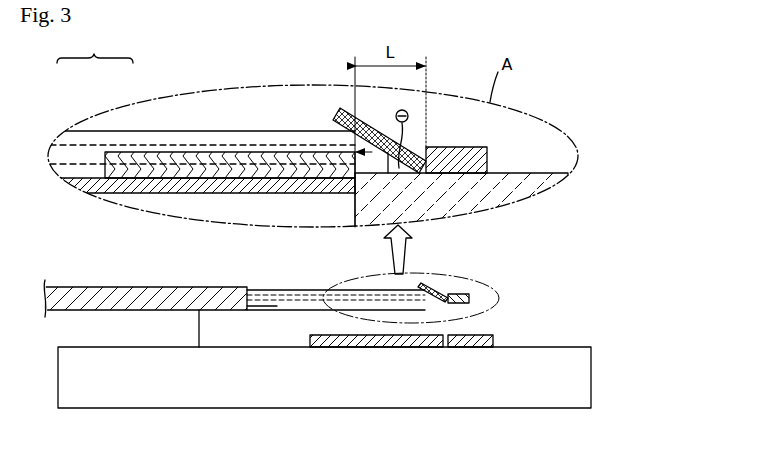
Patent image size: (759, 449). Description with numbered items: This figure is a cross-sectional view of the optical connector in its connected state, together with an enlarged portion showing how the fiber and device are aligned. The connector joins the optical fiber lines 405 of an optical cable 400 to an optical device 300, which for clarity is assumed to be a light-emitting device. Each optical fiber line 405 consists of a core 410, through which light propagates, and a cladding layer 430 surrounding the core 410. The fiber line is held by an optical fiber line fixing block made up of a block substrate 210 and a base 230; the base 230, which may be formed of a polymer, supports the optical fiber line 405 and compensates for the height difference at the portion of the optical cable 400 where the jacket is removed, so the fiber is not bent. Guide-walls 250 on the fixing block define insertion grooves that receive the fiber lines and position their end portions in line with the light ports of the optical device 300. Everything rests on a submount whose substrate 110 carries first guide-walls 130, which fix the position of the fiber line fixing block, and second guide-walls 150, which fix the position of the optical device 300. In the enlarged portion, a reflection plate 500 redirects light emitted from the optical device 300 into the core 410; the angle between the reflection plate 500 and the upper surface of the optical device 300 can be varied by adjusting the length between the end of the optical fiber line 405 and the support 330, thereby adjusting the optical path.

The substrate 110 is at (580, 375).
The first guide-walls 130 is at (383, 348).
The second guide-walls 150 is at (470, 348).
The block substrate 210 is at (237, 340).
The base 230 is at (240, 185).
The guide-walls 250 is at (208, 165).
The optical device 300 is at (505, 323).
The support 330 is at (483, 157).
The optical cable 400 is at (60, 273).
The optical fiber line 405 is at (95, 50).
The core 410 is at (92, 152).
The cladding layer 430 is at (121, 140).
The reflection plate 500 is at (343, 112).